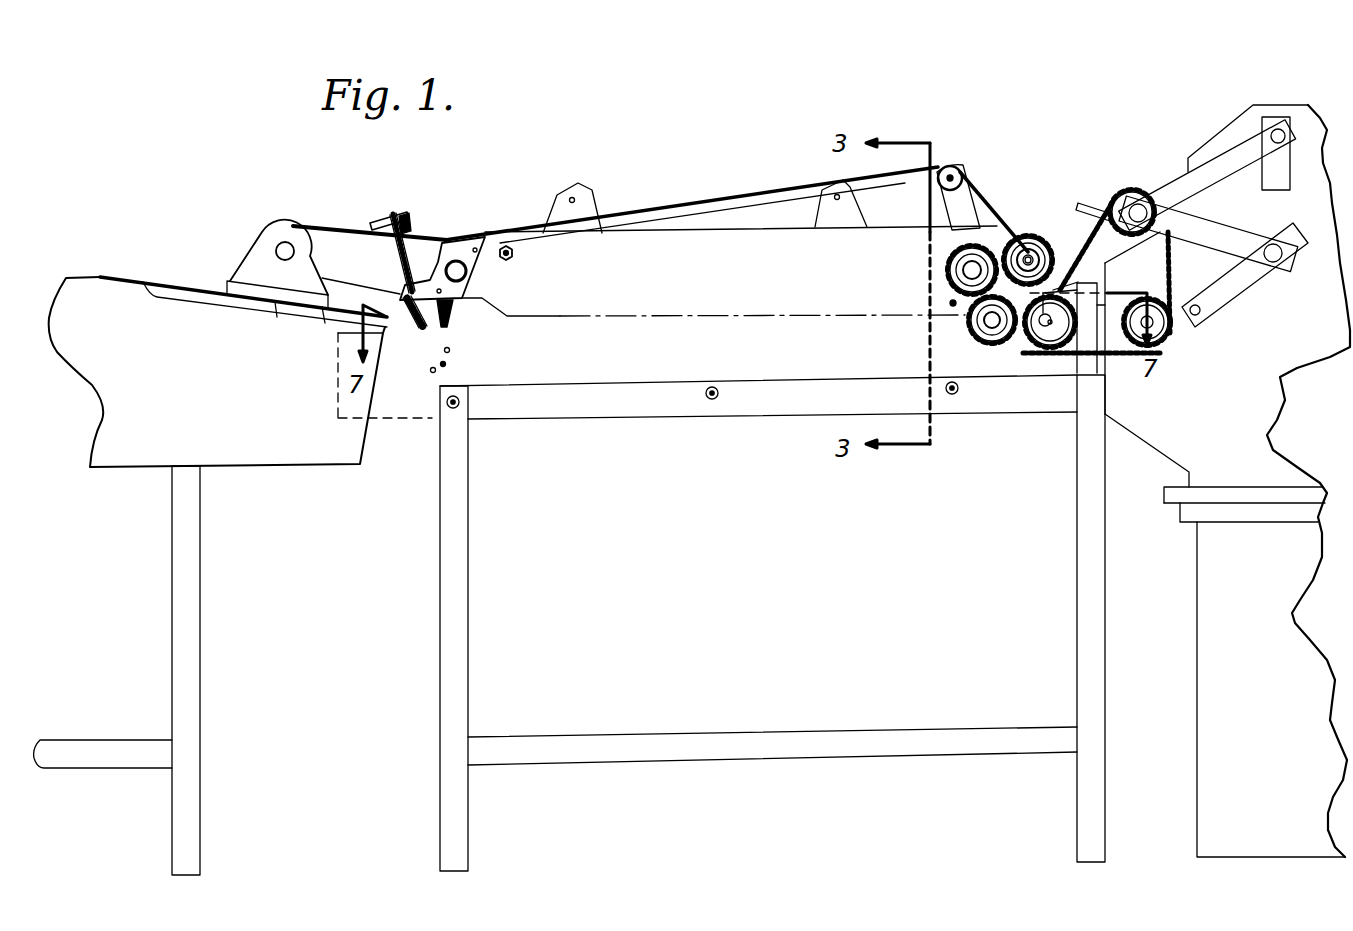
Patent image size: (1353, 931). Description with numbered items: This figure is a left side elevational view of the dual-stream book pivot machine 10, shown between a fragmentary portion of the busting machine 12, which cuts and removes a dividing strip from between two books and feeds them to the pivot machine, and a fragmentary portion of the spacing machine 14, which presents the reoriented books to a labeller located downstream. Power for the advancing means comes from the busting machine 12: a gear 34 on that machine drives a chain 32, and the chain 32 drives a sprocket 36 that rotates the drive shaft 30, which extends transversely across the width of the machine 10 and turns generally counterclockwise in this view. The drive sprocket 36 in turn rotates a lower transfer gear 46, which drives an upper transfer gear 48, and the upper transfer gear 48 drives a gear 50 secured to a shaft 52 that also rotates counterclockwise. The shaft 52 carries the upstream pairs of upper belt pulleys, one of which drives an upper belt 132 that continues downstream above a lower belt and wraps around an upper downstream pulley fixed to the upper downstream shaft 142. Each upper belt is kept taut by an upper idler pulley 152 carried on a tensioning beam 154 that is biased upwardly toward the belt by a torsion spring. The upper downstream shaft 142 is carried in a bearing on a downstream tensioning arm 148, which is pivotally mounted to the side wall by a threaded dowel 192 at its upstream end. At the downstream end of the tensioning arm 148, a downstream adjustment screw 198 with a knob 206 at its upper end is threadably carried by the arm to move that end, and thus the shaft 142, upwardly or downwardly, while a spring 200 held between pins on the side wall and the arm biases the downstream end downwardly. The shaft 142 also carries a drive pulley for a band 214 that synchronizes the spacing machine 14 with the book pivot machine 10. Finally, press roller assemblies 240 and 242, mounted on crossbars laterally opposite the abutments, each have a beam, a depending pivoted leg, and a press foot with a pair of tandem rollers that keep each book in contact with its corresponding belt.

The dual-stream book pivot machine 10 is at (990, 156).
The busting machine 12 is at (1210, 120).
The spacing machine 14 is at (170, 266).
The drive shaft 30 is at (1055, 328).
The chain 32 is at (1155, 338).
The gear 34 is at (1176, 325).
The sprocket 36 is at (1050, 342).
The lower transfer gear 46 is at (992, 340).
The upper transfer gear 48 is at (965, 262).
The gear 50 is at (1024, 237).
The shaft 52 is at (1030, 252).
The upper belt 132 is at (714, 193).
The upper downstream shaft 142 is at (468, 272).
The downstream tensioning arm 148 is at (442, 246).
The upper idler pulley 152 is at (948, 165).
The tensioning beam 154 is at (966, 206).
The threaded dowel 192 is at (515, 253).
The downstream adjustment screw 198 is at (438, 252).
The spring 200 is at (400, 330).
The knob 206 is at (392, 212).
The band 214 is at (330, 229).
The press roller assembly 240 is at (866, 212).
The press roller assembly 242 is at (596, 190).